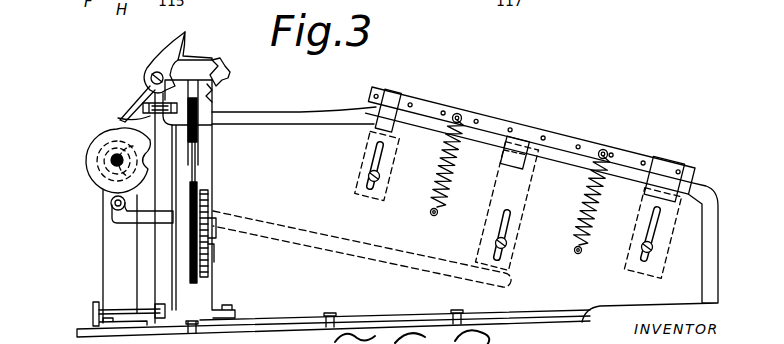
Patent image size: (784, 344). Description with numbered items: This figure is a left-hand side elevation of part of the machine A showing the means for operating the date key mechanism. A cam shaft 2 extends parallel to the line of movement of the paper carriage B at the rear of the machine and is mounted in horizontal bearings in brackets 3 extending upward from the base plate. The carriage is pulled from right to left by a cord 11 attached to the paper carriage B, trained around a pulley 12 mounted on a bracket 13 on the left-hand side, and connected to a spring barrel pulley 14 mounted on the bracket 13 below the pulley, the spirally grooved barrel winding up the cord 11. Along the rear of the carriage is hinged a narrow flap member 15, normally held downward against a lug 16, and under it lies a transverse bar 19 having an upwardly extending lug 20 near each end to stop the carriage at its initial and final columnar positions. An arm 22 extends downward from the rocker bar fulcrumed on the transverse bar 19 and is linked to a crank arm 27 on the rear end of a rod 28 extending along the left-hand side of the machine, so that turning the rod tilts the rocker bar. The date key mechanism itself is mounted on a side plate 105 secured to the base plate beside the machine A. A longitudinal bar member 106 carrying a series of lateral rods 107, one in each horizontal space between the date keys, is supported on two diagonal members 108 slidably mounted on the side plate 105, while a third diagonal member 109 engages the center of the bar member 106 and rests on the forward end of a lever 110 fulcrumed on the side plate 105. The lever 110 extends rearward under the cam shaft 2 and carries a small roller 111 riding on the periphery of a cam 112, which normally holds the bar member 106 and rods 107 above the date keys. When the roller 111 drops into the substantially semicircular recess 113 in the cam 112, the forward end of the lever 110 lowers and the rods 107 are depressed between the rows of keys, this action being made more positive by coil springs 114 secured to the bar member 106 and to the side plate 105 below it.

The cam shaft 2 is at (110, 159).
The brackets 3 is at (110, 268).
The cord 11 is at (193, 170).
The pulley 12 is at (208, 110).
The bracket 13 is at (212, 190).
The spring barrel pulley 14 is at (203, 250).
The flap member 15 is at (141, 109).
The lug 16 is at (148, 96).
The transverse bar 19 is at (118, 118).
The lug 20 is at (176, 88).
The arm 22 is at (160, 244).
The crank arm 27 is at (157, 310).
The rod 28 is at (92, 310).
The side plate 105 is at (278, 118).
The longitudinal bar member 106 is at (630, 155).
The lateral rods 107 is at (417, 100).
The diagonal members 108 is at (392, 118).
The third diagonal member 109 is at (528, 140).
The lever 110 is at (125, 222).
The roller 111 is at (110, 203).
The cam 112 is at (84, 138).
The semicircular recess 113 is at (133, 164).
The coil springs 114 is at (431, 209).
The machine A is at (333, 102).
The paper carriage B is at (231, 73).